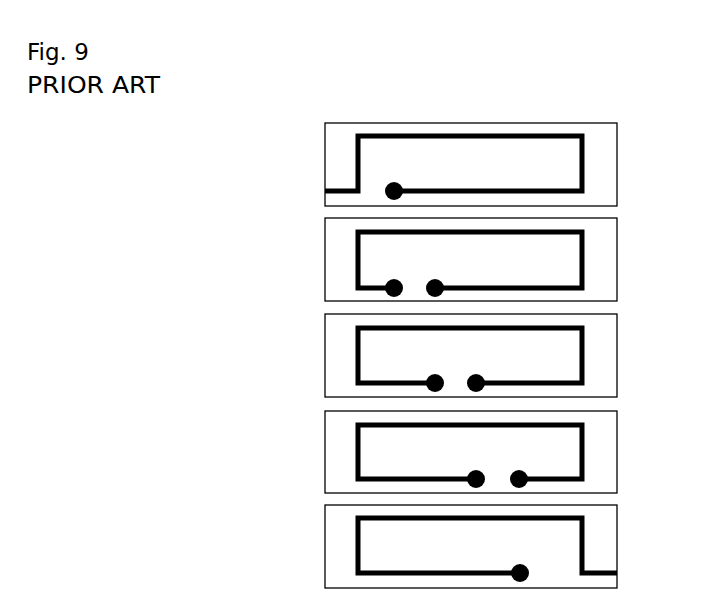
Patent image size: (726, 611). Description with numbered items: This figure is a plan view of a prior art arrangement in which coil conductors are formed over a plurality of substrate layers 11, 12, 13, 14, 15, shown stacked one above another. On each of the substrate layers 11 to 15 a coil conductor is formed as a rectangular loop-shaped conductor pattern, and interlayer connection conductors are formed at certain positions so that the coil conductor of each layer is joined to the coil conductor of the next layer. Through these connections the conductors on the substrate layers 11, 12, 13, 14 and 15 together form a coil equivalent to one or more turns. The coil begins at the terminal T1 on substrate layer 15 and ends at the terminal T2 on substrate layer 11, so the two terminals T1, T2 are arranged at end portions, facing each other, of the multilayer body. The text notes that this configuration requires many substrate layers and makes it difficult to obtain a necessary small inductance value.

The substrate layer 11 is at (617, 531).
The substrate layer 12 is at (617, 450).
The substrate layer 13 is at (617, 356).
The substrate layer 14 is at (617, 261).
The substrate layer 15 is at (617, 162).
The terminal T1 is at (309, 193).
The terminal T2 is at (632, 574).